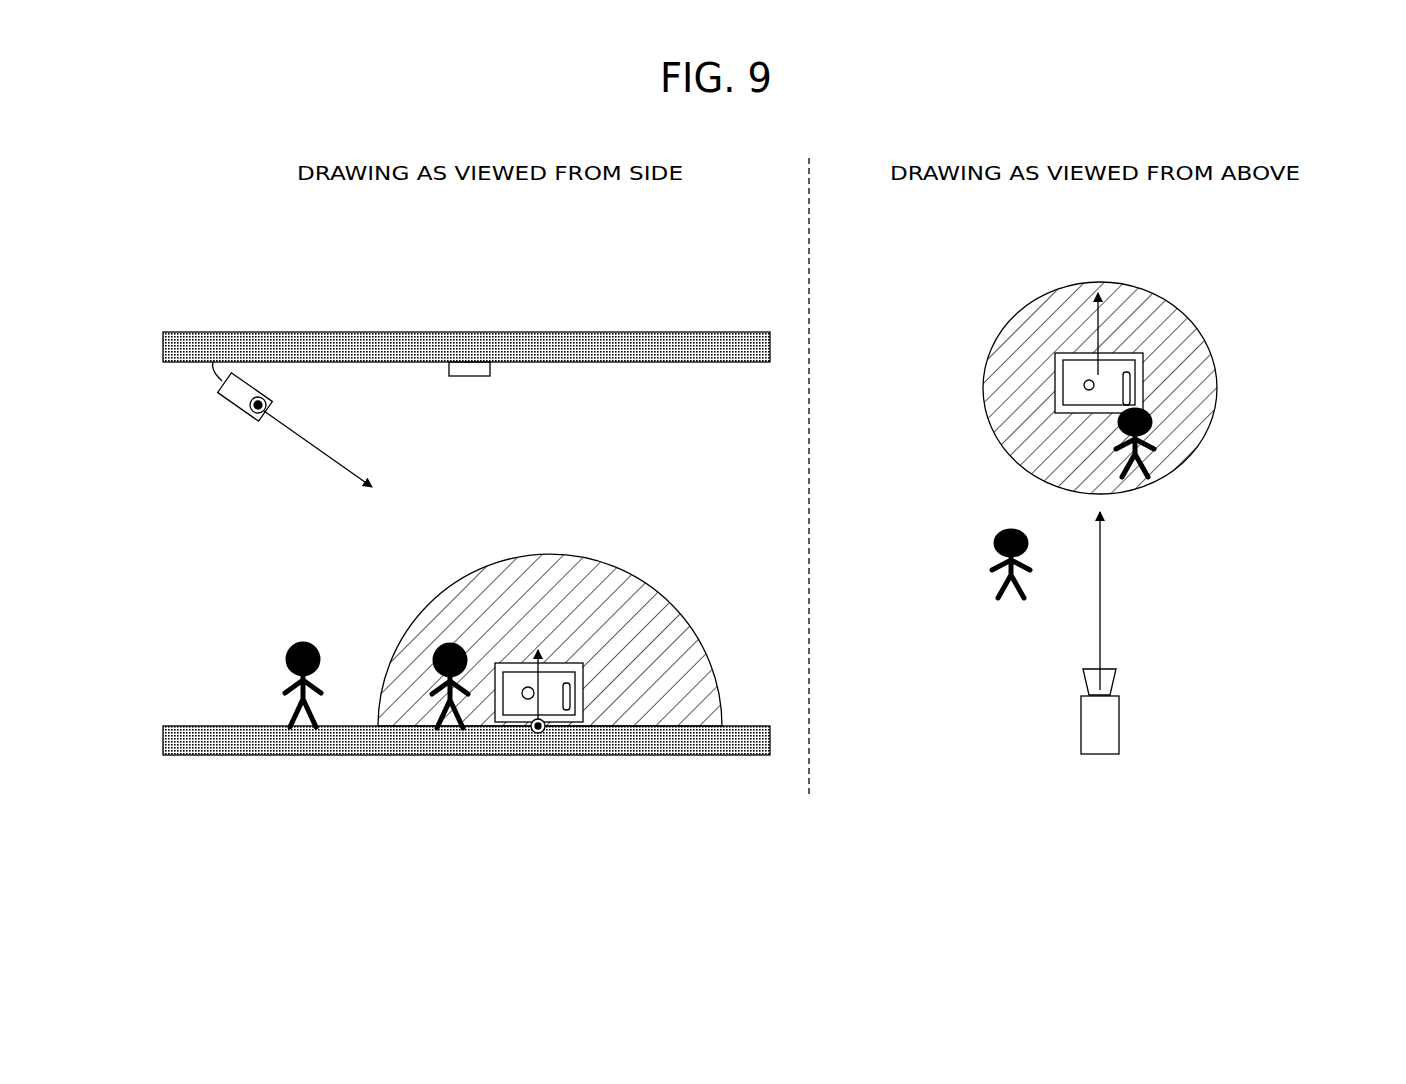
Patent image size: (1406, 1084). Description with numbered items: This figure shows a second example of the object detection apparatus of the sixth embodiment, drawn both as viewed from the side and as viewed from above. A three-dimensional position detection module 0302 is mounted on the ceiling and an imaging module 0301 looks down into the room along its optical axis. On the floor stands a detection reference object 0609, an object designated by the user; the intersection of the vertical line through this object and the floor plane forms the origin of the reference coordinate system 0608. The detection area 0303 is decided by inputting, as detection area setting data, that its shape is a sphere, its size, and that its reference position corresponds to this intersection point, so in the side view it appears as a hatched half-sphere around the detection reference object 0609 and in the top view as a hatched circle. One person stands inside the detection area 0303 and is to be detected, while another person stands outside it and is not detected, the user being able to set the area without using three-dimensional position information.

The imaging module 0301 is at (222, 401).
The three-dimensional position detection module 0302 is at (475, 332).
The detection area 0303 is at (1200, 255).
The reference coordinate system 0608 is at (538, 735).
The detection reference object 0609 is at (1067, 367).